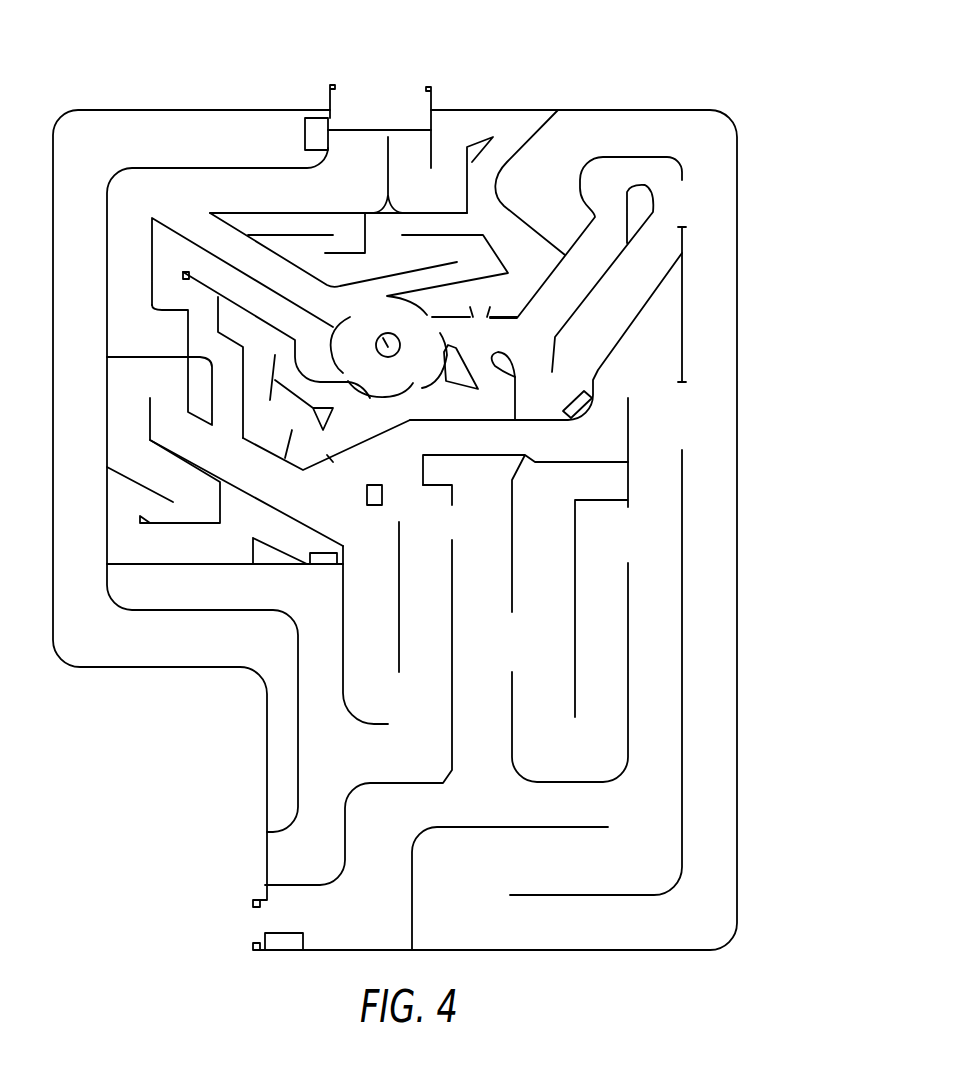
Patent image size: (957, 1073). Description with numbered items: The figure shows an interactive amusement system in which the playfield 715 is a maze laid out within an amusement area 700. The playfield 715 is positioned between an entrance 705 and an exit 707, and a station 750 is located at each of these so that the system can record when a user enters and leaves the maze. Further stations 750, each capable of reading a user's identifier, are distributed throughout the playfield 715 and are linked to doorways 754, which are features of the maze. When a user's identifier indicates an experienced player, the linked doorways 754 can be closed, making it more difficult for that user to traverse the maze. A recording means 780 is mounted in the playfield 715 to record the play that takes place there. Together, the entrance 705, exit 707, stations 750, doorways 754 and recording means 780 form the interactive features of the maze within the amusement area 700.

The amusement area 700 is at (128, 53).
The entrance 705 is at (394, 98).
The exit 707 is at (256, 934).
The playfield 715 is at (737, 563).
The station 750 is at (312, 130).
The doorway 754 is at (706, 214).
The recording means 780 is at (330, 463).